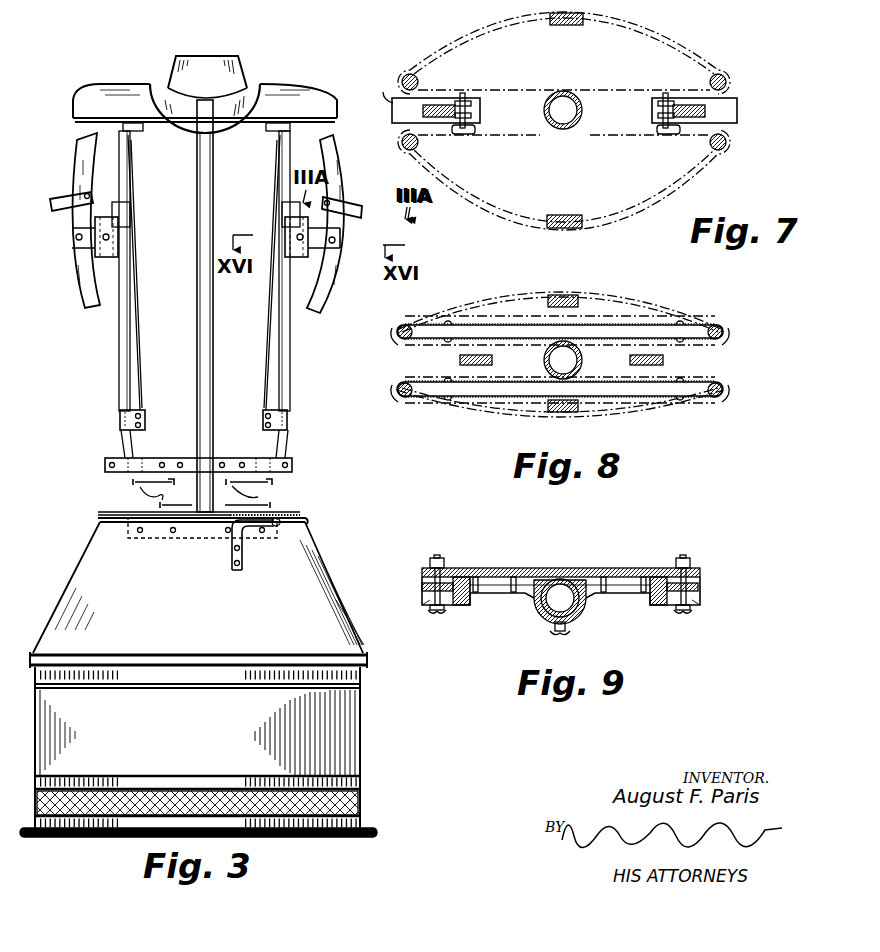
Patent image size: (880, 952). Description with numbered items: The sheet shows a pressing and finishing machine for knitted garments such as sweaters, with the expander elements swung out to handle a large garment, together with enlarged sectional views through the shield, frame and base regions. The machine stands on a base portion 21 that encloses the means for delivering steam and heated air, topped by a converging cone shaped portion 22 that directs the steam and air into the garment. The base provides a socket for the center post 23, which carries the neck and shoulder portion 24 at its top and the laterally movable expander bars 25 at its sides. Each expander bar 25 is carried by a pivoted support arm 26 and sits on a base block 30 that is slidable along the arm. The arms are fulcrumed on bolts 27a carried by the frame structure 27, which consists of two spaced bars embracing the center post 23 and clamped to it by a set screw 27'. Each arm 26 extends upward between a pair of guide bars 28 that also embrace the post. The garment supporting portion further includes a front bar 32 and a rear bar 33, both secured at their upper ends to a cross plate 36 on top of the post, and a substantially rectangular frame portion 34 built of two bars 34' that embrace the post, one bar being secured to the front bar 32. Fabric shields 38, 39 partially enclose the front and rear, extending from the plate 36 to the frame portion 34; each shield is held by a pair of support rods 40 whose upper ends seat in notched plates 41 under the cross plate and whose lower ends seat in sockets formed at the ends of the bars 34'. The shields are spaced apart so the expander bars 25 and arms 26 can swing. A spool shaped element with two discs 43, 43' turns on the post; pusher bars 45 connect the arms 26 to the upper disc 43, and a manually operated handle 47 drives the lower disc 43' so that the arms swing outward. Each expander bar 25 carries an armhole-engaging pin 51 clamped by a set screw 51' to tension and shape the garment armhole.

In FIG. 3, the base portion 21 is at (360, 767).
In FIG. 3, the cone shaped portion 22 is at (332, 575).
In FIG. 3, the center post 23 is at (197, 390).
In FIG. 7, the center post 23 is at (588, 120).
In FIG. 8, the center post 23 is at (580, 375).
In FIG. 9, the center post 23 is at (536, 605).
In FIG. 3, the neck and shoulder portion 24 is at (297, 95).
In FIG. 3, the expander bar 25 is at (82, 272).
In FIG. 7, the expander bar 25 is at (691, 105).
In FIG. 3, the support arm 26 is at (137, 336).
In FIG. 8, the support arm 26 is at (460, 360).
In FIG. 9, the support arm 26 is at (422, 585).
In FIG. 3, the frame structure 27 is at (202, 549).
In FIG. 9, the frame structure 27 is at (561, 570).
In FIG. 9, the set screw 27' is at (586, 637).
In FIG. 9, the bolt 27a is at (441, 607).
In FIG. 3, the guide bars 28 is at (292, 462).
In FIG. 3, the base block 30 is at (73, 228).
In FIG. 3, the front bar 32 is at (198, 277).
In FIG. 7, the front bar 32 is at (576, 215).
In FIG. 8, the front bar 32 is at (585, 412).
In FIG. 7, the rear bar 33 is at (557, 26).
In FIG. 8, the rear bar 33 is at (580, 275).
In FIG. 3, the frame portion 34 is at (183, 419).
In FIG. 8, the frame portion 34 is at (551, 364).
In FIG. 8, the bars 34' is at (560, 368).
In FIG. 3, the cross plate 36 is at (335, 124).
In FIG. 7, the fabric shield 38 is at (470, 210).
In FIG. 8, the fabric shield 38 is at (662, 410).
In FIG. 7, the fabric shield 39 is at (650, 31).
In FIG. 8, the fabric shield 39 is at (508, 295).
In FIG. 3, the support rods 40 is at (120, 368).
In FIG. 7, the support rods 40 is at (418, 84).
In FIG. 8, the support rods 40 is at (728, 335).
In FIG. 3, the spaced plates 41 is at (141, 131).
In FIG. 3, the upper disc 43 is at (269, 495).
In FIG. 3, the lower disc 43' is at (143, 490).
In FIG. 3, the pusher bar 45 is at (110, 508).
In FIG. 3, the handle 47 is at (278, 524).
In FIG. 3, the armhole-engaging pin 51 is at (218, 196).
In FIG. 7, the armhole-engaging pin 51 is at (378, 84).
In FIG. 3, the set screw 51' is at (238, 185).
In FIG. 7, the set screw 51' is at (566, 123).